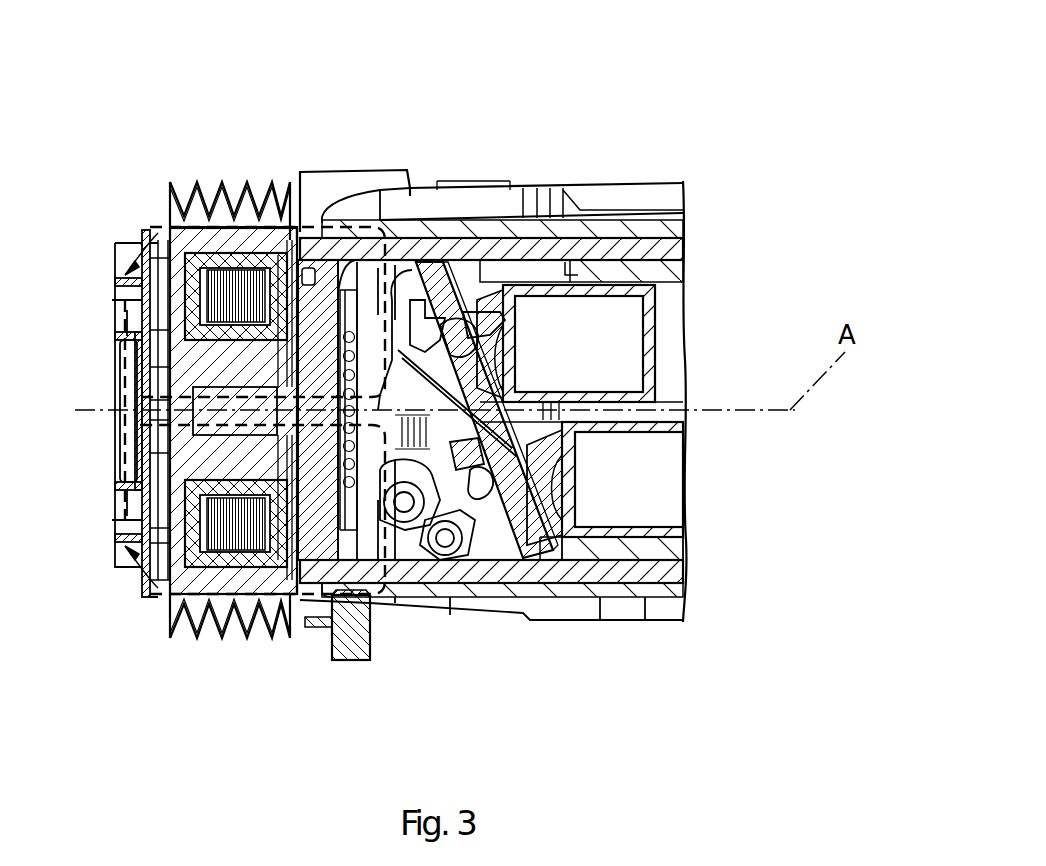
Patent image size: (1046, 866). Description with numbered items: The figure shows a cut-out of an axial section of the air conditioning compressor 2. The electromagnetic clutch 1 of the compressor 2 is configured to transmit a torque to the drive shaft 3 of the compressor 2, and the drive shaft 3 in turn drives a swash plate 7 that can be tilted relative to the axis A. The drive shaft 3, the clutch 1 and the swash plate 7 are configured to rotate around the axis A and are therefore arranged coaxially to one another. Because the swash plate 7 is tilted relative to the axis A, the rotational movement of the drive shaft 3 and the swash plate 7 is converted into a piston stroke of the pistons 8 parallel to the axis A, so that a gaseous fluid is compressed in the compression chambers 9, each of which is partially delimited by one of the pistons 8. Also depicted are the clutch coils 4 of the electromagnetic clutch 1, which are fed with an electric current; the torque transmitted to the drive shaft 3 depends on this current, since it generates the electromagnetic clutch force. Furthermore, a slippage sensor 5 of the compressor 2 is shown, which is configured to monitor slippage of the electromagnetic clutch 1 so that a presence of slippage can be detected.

The electromagnetic clutch 1 is at (155, 317).
The air conditioning compressor 2 is at (745, 171).
The drive shaft 3 is at (212, 430).
The clutch coils 4 is at (228, 282).
The slippage sensor 5 is at (347, 645).
The swash plate 7 is at (520, 525).
The pistons 8 is at (655, 322).
The compression chambers 9 is at (672, 358).